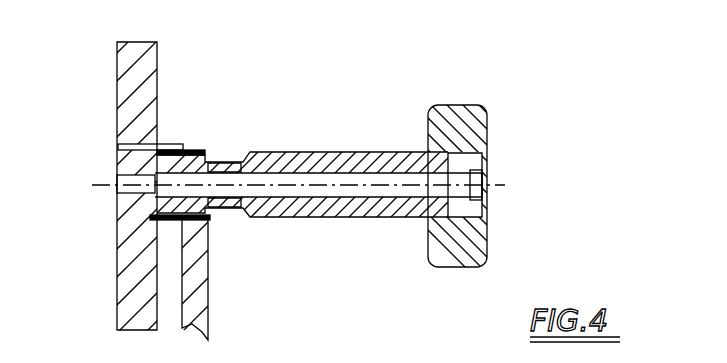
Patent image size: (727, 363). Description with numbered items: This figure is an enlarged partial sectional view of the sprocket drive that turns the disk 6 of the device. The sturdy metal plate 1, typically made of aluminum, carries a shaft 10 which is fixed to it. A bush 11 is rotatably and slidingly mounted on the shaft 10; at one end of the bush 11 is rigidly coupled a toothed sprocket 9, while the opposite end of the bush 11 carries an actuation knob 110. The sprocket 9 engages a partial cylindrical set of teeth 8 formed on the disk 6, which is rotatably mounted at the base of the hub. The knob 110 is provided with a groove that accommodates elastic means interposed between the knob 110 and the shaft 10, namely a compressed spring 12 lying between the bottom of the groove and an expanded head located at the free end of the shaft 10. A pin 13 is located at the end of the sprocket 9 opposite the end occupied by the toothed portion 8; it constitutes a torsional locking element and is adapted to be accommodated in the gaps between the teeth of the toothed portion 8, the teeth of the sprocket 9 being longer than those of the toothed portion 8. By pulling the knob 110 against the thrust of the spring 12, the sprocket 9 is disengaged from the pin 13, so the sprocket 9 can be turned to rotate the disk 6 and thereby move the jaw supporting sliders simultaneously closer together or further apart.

The metal plate 1 is at (116, 78).
The pin 13 is at (170, 143).
The toothed sprocket 9 is at (196, 151).
The partial cylindrical set of teeth 8 is at (212, 219).
The shaft 10 is at (342, 178).
The bush 11 is at (339, 218).
The disk 6 is at (209, 320).
The compressed spring 12 is at (470, 200).
The actuation knob 110 is at (446, 268).